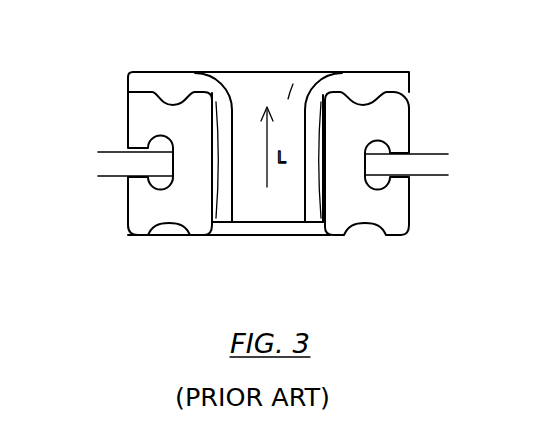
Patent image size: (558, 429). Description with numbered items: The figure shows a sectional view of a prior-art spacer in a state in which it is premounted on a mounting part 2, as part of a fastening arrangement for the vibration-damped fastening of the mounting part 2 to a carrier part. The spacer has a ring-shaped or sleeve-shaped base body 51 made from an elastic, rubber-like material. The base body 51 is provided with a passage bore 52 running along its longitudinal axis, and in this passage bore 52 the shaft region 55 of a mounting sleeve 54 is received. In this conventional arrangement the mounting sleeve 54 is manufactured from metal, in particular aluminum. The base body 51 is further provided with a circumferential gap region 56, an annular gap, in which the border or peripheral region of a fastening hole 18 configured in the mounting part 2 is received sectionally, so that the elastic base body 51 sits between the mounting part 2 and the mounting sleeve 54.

The mounting sleeve 54 is at (380, 80).
The shaft region 55 is at (223, 128).
The passage bore 52 is at (213, 152).
The base body 51 is at (392, 124).
The fastening hole 18 is at (167, 172).
The mounting part 2 is at (420, 153).
The gap region 56 is at (106, 221).